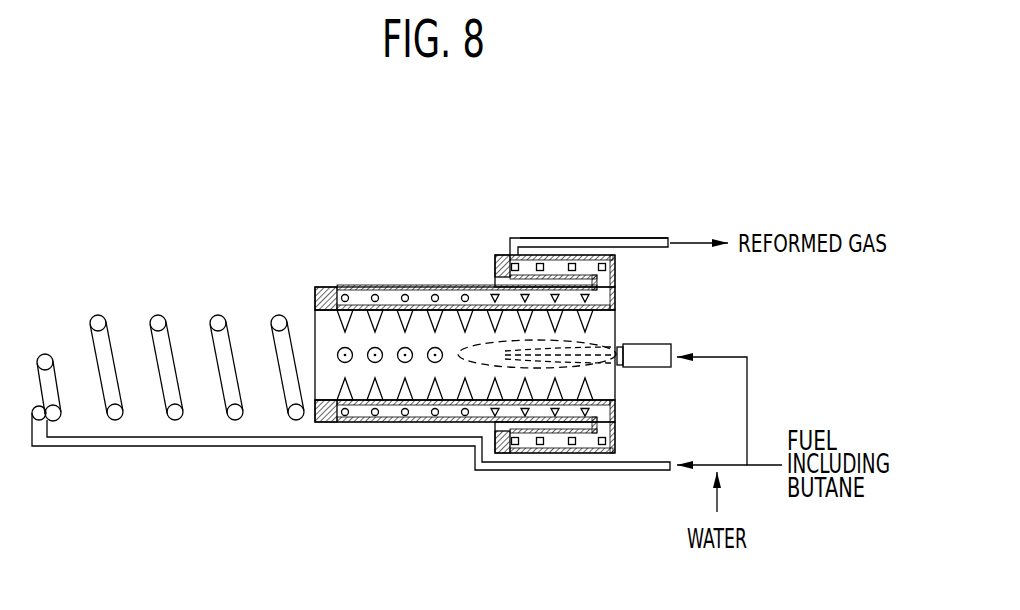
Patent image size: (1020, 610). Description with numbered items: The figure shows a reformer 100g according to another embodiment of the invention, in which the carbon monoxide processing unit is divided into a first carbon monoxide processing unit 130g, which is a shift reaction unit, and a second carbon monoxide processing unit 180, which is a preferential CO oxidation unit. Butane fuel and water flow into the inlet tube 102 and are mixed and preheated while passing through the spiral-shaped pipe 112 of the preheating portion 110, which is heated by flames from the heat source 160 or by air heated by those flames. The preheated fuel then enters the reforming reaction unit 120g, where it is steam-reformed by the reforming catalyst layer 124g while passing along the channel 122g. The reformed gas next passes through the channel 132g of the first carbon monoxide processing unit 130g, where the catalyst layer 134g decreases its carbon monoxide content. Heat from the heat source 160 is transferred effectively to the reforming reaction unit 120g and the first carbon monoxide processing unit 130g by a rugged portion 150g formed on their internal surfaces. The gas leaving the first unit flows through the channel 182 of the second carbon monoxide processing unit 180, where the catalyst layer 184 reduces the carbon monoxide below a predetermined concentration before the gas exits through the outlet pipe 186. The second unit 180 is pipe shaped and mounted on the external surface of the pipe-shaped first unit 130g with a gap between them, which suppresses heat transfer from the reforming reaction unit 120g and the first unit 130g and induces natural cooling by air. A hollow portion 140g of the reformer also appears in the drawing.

The reformer 100g is at (80, 187).
The preheating portion 110 is at (172, 300).
The pipe 112 is at (218, 317).
The inlet tube 102 is at (638, 472).
The reforming reaction unit 120g is at (372, 262).
The channel 122g is at (330, 287).
The reforming catalyst layer 124g is at (375, 295).
The rugged portion 150g is at (417, 322).
The fuel injection nozzles 140g is at (358, 370).
The heat source 160 is at (660, 344).
The first carbon monoxide processing unit 130g is at (483, 272).
The second carbon monoxide processing unit 180 is at (502, 237).
The channel 182 is at (563, 258).
The catalyst layer 184 is at (602, 258).
The outlet pipe 186 is at (655, 238).
The channel 132g is at (484, 445).
The catalyst layer 134g is at (555, 413).